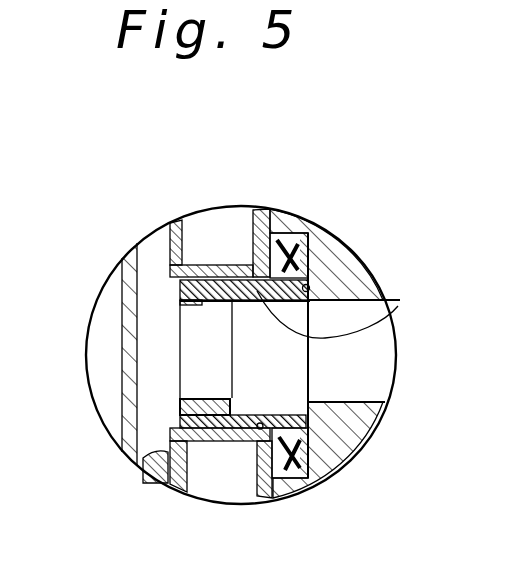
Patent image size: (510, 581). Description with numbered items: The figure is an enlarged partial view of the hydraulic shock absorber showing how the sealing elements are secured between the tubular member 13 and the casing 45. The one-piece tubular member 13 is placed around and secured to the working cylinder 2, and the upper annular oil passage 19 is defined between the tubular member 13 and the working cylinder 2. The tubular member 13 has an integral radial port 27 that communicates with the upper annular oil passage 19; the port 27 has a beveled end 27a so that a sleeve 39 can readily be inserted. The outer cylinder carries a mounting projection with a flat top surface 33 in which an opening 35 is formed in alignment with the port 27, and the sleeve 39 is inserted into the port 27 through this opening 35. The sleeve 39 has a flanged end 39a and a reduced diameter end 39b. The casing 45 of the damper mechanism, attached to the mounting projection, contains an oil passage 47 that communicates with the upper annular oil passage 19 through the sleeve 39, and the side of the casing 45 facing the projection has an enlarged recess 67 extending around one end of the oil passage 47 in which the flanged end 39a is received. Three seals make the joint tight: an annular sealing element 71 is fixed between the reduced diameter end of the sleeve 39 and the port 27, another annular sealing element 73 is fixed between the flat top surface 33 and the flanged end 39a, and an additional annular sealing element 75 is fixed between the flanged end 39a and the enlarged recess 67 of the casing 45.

The working cylinder 2 is at (118, 382).
The tubular member 13 is at (175, 220).
The upper annular oil passage 19 is at (157, 348).
The radial port 27 is at (215, 265).
The beveled end 27a is at (245, 441).
The flat top surface 33 is at (278, 486).
The opening 35 is at (252, 430).
The sleeve 39 is at (398, 306).
The flanged end 39a is at (287, 232).
The reduced diameter end 39b is at (180, 301).
The casing 45 is at (365, 440).
The oil passage 47 is at (370, 402).
The enlarged recess 67 is at (310, 284).
The annular sealing element 71 is at (176, 292).
The annular sealing element 73 is at (237, 265).
The annular sealing element 75 is at (312, 243).